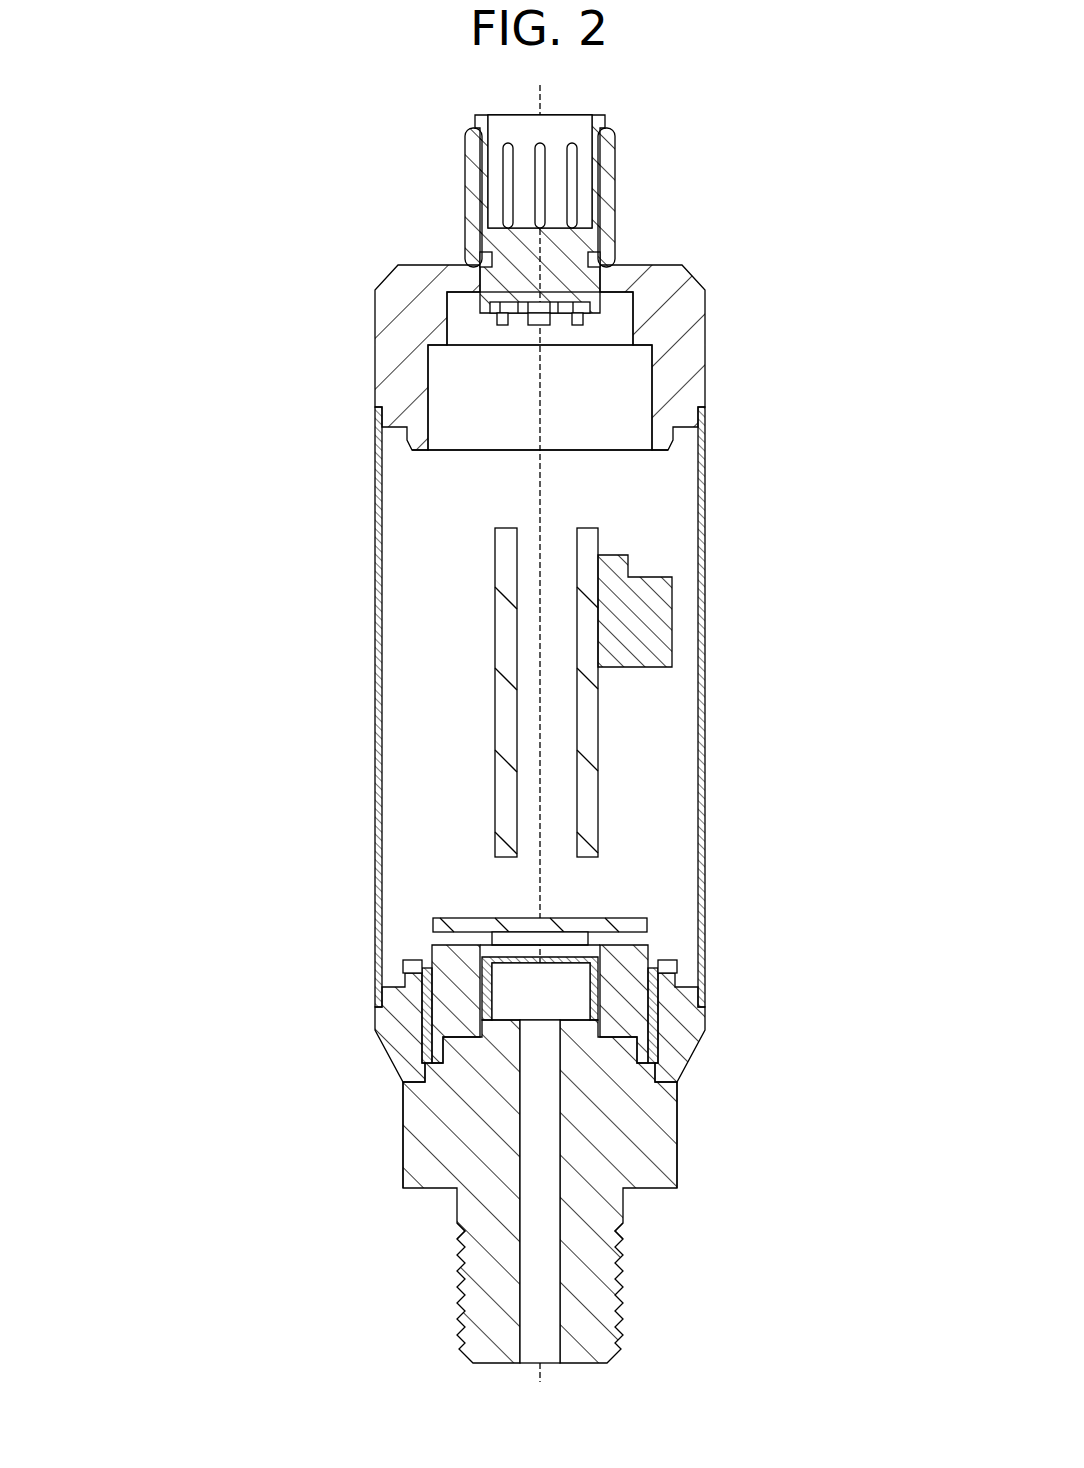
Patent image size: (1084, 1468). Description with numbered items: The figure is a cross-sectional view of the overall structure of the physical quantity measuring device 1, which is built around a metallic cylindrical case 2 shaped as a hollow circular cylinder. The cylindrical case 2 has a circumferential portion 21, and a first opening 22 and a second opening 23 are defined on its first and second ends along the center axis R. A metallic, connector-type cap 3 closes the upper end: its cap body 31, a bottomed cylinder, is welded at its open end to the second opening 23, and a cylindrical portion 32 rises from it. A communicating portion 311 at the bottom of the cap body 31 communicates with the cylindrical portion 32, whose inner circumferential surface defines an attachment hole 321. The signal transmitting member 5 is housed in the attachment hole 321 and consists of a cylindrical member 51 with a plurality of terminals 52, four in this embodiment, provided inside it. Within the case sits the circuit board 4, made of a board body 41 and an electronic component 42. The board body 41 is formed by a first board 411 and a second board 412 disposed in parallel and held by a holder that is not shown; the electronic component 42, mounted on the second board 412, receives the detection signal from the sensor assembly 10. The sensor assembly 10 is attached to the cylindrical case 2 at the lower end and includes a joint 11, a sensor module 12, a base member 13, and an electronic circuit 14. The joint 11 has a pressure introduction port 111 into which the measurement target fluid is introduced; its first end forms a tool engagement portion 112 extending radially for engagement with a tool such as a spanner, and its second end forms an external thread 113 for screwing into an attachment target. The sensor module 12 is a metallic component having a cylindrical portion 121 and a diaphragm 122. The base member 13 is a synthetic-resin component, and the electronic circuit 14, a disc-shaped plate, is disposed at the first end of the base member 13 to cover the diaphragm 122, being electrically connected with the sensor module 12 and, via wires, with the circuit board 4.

The physical quantity measuring device 1 is at (852, 170).
The cylindrical case 2 is at (303, 512).
The circumferential portion 21 is at (377, 447).
The first opening 22 is at (642, 1063).
The second opening 23 is at (604, 446).
The cap 3 is at (757, 288).
The cap body 31 is at (706, 350).
The communicating portion 311 is at (603, 298).
The cylindrical portion 32 is at (584, 220).
The attachment hole 321 is at (590, 156).
The circuit board 4 is at (634, 690).
The board body 41 is at (674, 692).
The first board 411 is at (517, 676).
The second board 412 is at (600, 731).
The electronic component 42 is at (673, 620).
The signal transmitting member 5 is at (627, 109).
The cylindrical member 51 is at (586, 118).
The terminal 52 is at (508, 145).
The sensor assembly 10 is at (347, 1052).
The joint 11 is at (787, 1130).
The pressure introduction port 111 is at (560, 1265).
The tool engagement portion 112 is at (679, 1150).
The external thread 113 is at (461, 1280).
The sensor module 12 is at (656, 992).
The cylindrical portion 121 is at (603, 978).
The diaphragm 122 is at (598, 957).
The base member 13 is at (422, 953).
The electronic circuit 14 is at (435, 925).
The center axis R is at (539, 718).